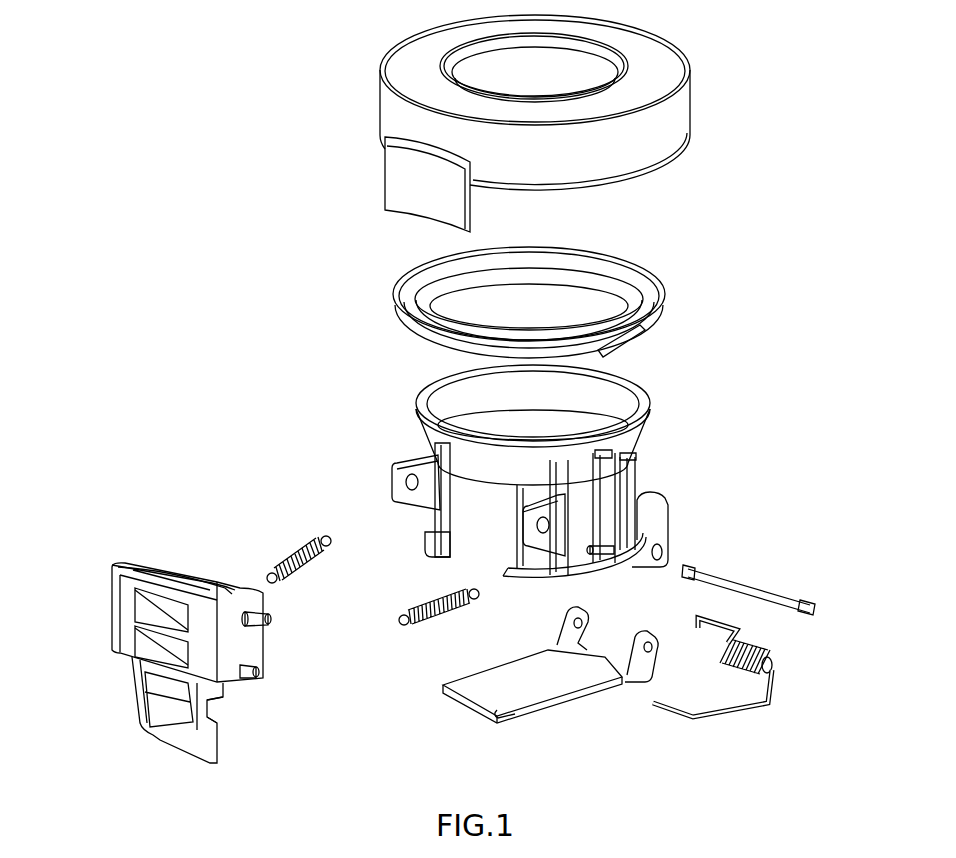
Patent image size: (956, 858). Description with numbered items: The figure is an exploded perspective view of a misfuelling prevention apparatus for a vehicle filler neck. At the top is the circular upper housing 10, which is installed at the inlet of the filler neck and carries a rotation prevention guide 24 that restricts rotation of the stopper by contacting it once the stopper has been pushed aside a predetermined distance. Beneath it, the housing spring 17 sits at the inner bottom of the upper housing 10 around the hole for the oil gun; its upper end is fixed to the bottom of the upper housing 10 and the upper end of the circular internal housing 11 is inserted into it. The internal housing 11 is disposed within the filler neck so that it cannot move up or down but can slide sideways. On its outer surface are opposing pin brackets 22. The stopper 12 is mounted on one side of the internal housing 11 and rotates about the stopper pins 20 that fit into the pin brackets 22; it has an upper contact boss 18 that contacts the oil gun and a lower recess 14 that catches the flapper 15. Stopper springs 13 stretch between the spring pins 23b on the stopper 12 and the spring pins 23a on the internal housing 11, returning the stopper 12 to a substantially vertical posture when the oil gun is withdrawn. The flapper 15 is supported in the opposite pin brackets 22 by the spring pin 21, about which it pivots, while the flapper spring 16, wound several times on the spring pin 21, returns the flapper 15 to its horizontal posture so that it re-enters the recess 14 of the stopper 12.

The upper housing 10 is at (683, 104).
The rotation prevention guide 24 is at (403, 185).
The housing spring 17 is at (648, 284).
The internal housing 11 is at (620, 403).
The pin brackets 22 is at (395, 463).
The spring pin 23a is at (613, 565).
The spring pin 21 is at (755, 583).
The stopper 12 is at (122, 608).
The upper contact boss 18 is at (218, 588).
The lower recess 14 is at (222, 710).
The stopper pin 20 is at (270, 622).
The spring pin 23b is at (262, 677).
The stopper spring 13 is at (423, 603).
The flapper 15 is at (535, 687).
The flapper spring 16 is at (775, 657).